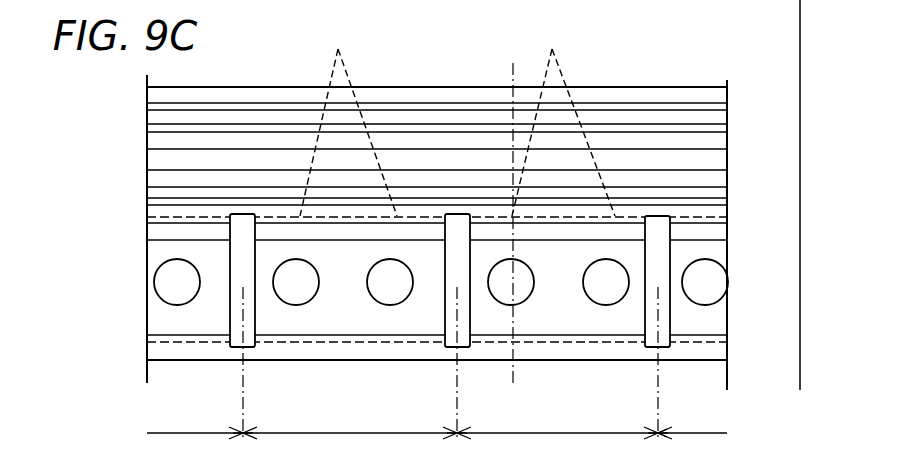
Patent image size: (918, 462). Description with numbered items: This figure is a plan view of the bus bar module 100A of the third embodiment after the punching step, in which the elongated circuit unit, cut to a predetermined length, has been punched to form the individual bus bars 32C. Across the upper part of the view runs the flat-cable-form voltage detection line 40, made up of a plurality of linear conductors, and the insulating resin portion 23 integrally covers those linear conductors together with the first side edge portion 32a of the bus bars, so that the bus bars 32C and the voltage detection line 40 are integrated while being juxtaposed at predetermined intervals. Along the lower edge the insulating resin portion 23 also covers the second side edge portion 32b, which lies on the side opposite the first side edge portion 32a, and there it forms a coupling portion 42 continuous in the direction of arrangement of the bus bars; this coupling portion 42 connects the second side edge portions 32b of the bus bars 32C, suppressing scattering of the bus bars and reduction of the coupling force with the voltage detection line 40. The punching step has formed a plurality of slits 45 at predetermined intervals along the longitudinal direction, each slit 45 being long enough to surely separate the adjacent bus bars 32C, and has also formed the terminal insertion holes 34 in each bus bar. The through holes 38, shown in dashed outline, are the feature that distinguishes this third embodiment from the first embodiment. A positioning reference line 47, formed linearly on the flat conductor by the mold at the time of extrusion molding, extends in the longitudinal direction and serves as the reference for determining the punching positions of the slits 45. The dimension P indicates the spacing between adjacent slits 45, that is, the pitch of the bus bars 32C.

The bus bar module 100A is at (507, 382).
The insulating resin portion 23 is at (598, 97).
The voltage detection line 40 is at (735, 92).
The coupling portion 42 is at (735, 340).
The first side edge portion 32a is at (200, 215).
The second side edge portion 32b is at (265, 346).
The bus bar 32C is at (190, 322).
The terminal insertion hole 34 is at (178, 272).
The through hole 38 is at (457, 119).
The slit 45 is at (238, 240).
The positioning reference line 47 is at (178, 242).
The pitch P is at (437, 363).